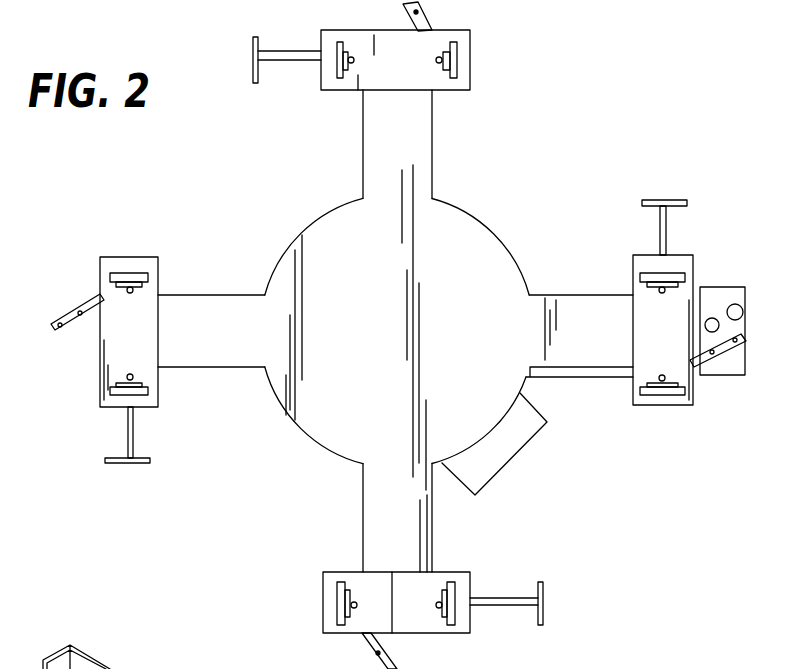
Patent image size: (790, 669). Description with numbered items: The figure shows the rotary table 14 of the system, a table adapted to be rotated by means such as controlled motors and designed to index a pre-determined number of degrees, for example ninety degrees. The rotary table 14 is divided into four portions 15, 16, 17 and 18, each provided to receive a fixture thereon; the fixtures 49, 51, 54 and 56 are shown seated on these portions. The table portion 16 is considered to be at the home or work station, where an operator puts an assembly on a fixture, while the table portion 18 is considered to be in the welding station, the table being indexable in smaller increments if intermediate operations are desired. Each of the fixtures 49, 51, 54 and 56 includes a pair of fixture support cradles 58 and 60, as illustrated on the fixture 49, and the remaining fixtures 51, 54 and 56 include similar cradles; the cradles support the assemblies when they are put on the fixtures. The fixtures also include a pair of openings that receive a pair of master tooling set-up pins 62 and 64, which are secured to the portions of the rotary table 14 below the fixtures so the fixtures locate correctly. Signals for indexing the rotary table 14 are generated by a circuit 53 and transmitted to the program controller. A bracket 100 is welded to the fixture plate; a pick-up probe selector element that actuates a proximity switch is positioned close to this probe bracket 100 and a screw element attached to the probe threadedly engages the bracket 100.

The rotary table 14 is at (489, 488).
The table portion 15 is at (179, 271).
The table portion 16 is at (339, 567).
The table portion 17 is at (629, 388).
The table portion 18 is at (438, 93).
The fixture 49 is at (680, 398).
The fixture 51 is at (152, 393).
The circuit 53 is at (530, 413).
The fixture 54 is at (463, 60).
The fixture 56 is at (463, 582).
The fixture support cradle 58 is at (646, 273).
The fixture support cradle 60 is at (647, 396).
The master tooling set-up pin 62 is at (659, 290).
The master tooling set-up pin 64 is at (662, 375).
The bracket 100 is at (429, 16).